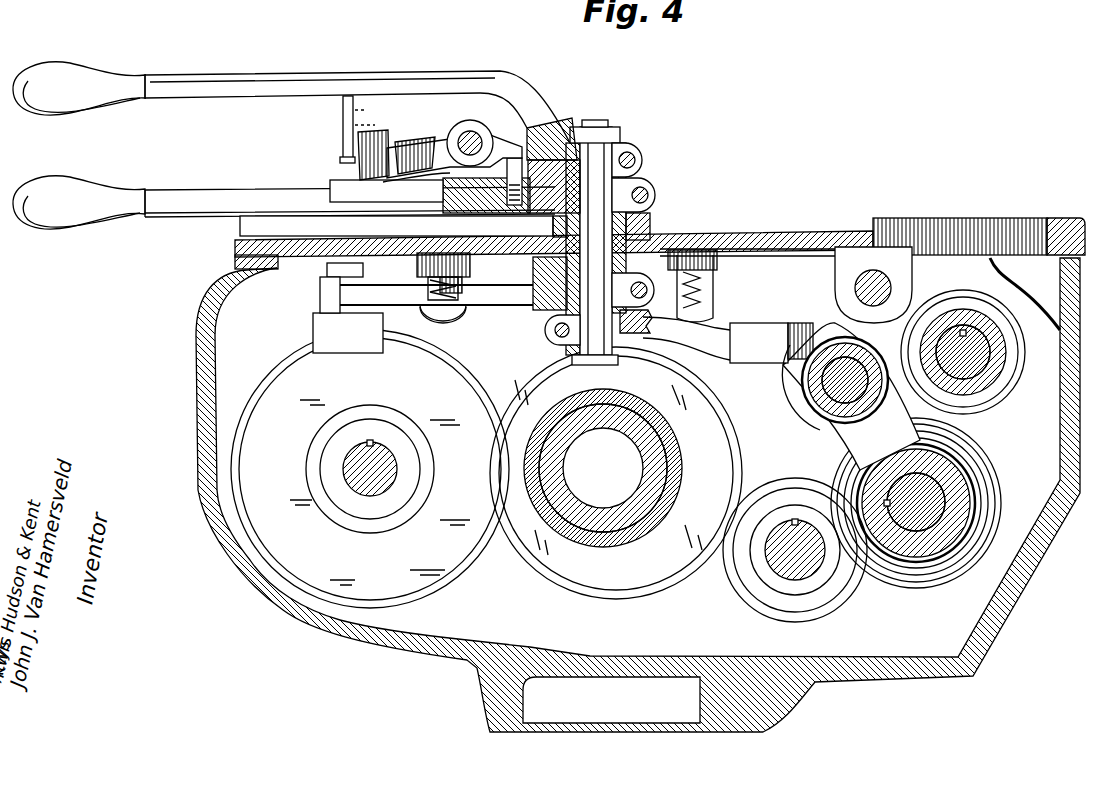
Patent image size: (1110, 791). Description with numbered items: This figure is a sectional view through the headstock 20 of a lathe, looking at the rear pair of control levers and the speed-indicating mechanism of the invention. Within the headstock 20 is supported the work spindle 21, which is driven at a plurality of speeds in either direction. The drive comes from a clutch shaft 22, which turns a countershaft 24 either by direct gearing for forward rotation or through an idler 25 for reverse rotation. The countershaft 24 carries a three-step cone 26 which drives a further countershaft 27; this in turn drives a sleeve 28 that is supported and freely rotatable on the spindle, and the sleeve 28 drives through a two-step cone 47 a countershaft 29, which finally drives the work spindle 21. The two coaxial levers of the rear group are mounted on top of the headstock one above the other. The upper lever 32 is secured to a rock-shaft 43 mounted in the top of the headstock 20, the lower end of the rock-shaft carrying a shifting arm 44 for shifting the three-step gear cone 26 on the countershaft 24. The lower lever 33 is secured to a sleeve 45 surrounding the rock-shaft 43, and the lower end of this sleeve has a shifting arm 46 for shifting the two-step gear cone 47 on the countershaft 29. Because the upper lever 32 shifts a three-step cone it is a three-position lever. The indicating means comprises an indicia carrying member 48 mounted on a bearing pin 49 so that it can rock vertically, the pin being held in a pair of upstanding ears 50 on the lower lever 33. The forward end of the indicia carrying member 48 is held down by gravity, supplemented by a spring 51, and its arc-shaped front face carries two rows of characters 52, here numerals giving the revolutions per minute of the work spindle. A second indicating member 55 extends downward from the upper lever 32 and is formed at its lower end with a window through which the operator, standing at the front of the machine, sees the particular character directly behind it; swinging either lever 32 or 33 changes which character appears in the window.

The headstock 20 is at (822, 232).
The work spindle 21 is at (632, 432).
The clutch shaft 22 is at (985, 380).
The countershaft 24 is at (958, 500).
The idler 25 is at (812, 395).
The three-step cone 26 is at (980, 462).
The countershaft 27 is at (775, 558).
The sleeve 28 is at (533, 570).
The countershaft 29 is at (352, 487).
The upper lever 32 is at (313, 53).
The lower lever 33 is at (236, 192).
The rock-shaft 43 is at (608, 158).
The shifting arm 44 is at (705, 365).
The sleeve 45 is at (645, 232).
The shifting arm 46 is at (503, 306).
The two-step cone 47 is at (292, 368).
The indicia carrying member 48 is at (426, 152).
The bearing pin 49 is at (472, 141).
The upstanding ears 50 is at (438, 182).
The spring 51 is at (403, 226).
The characters 52 is at (358, 172).
The second indicating member 55 is at (344, 140).